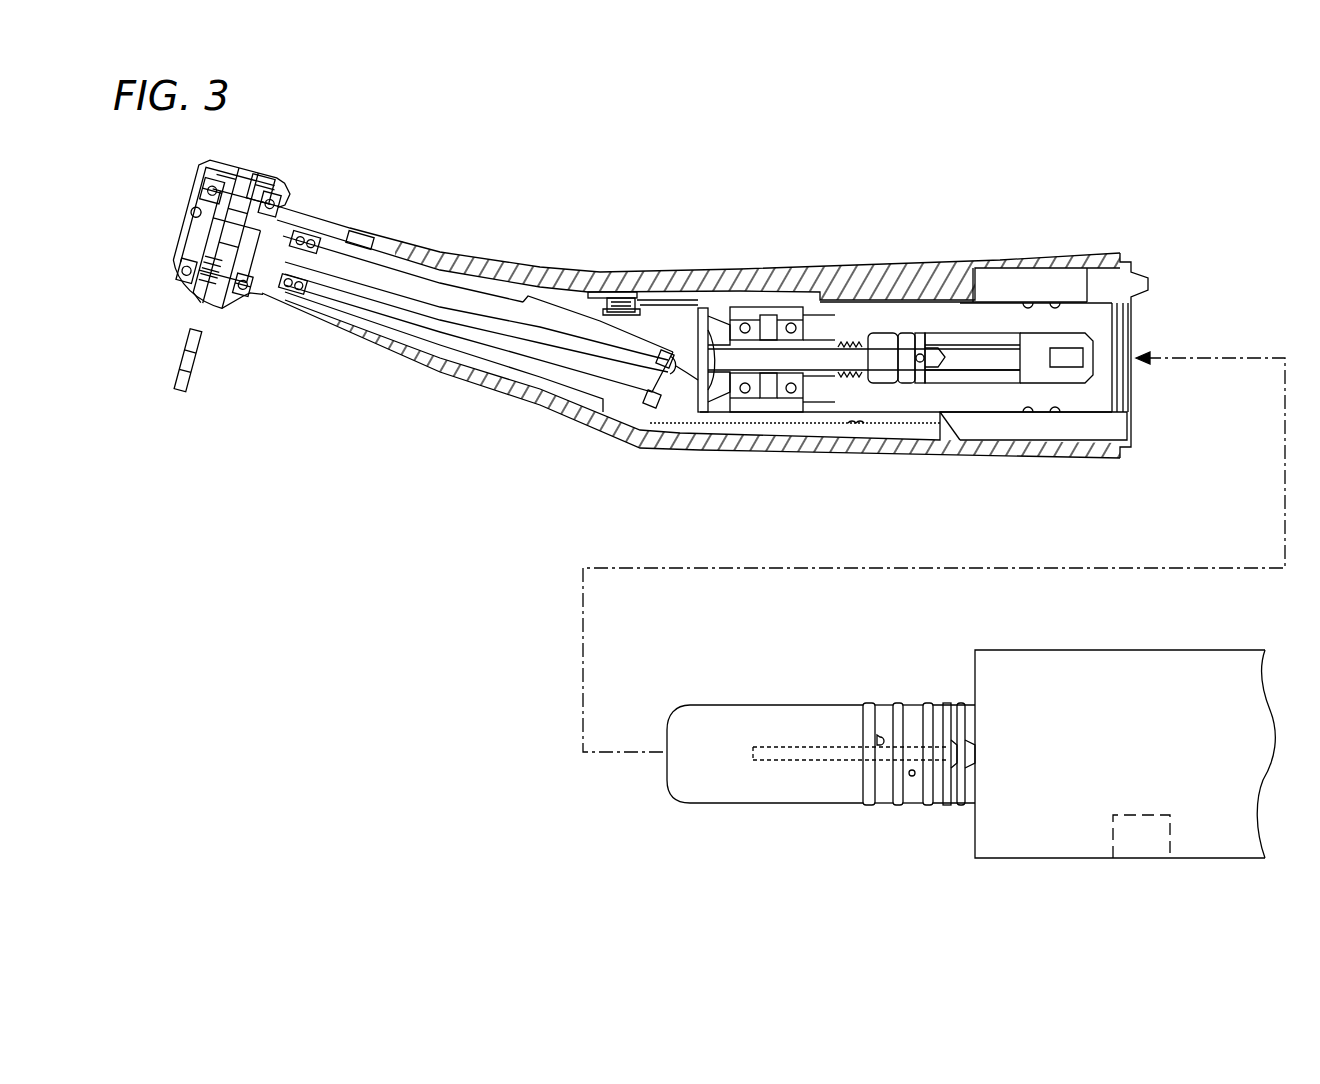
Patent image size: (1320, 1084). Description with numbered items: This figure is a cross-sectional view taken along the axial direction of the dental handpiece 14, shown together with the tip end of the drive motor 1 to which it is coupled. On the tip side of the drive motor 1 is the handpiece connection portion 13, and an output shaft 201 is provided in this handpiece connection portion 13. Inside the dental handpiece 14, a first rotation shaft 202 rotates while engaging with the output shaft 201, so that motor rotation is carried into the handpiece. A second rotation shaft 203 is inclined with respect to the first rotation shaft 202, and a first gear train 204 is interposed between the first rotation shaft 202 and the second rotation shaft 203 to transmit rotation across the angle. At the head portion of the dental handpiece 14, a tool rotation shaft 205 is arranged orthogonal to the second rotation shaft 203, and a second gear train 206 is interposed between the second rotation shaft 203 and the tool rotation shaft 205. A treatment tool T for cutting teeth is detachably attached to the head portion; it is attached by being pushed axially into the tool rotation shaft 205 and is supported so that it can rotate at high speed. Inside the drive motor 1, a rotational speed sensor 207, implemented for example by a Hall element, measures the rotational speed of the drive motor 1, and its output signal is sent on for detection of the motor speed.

The drive motor 1 is at (1138, 665).
The handpiece connection portion 13 is at (738, 725).
The dental handpiece 14 is at (568, 232).
The output shaft 201 is at (848, 747).
The first rotation shaft 202 is at (888, 353).
The second rotation shaft 203 is at (400, 280).
The first gear train 204 is at (703, 415).
The tool rotation shaft 205 is at (200, 302).
The second gear train 206 is at (255, 283).
The rotational speed sensor 207 is at (1140, 862).
The treatment tool T is at (197, 388).